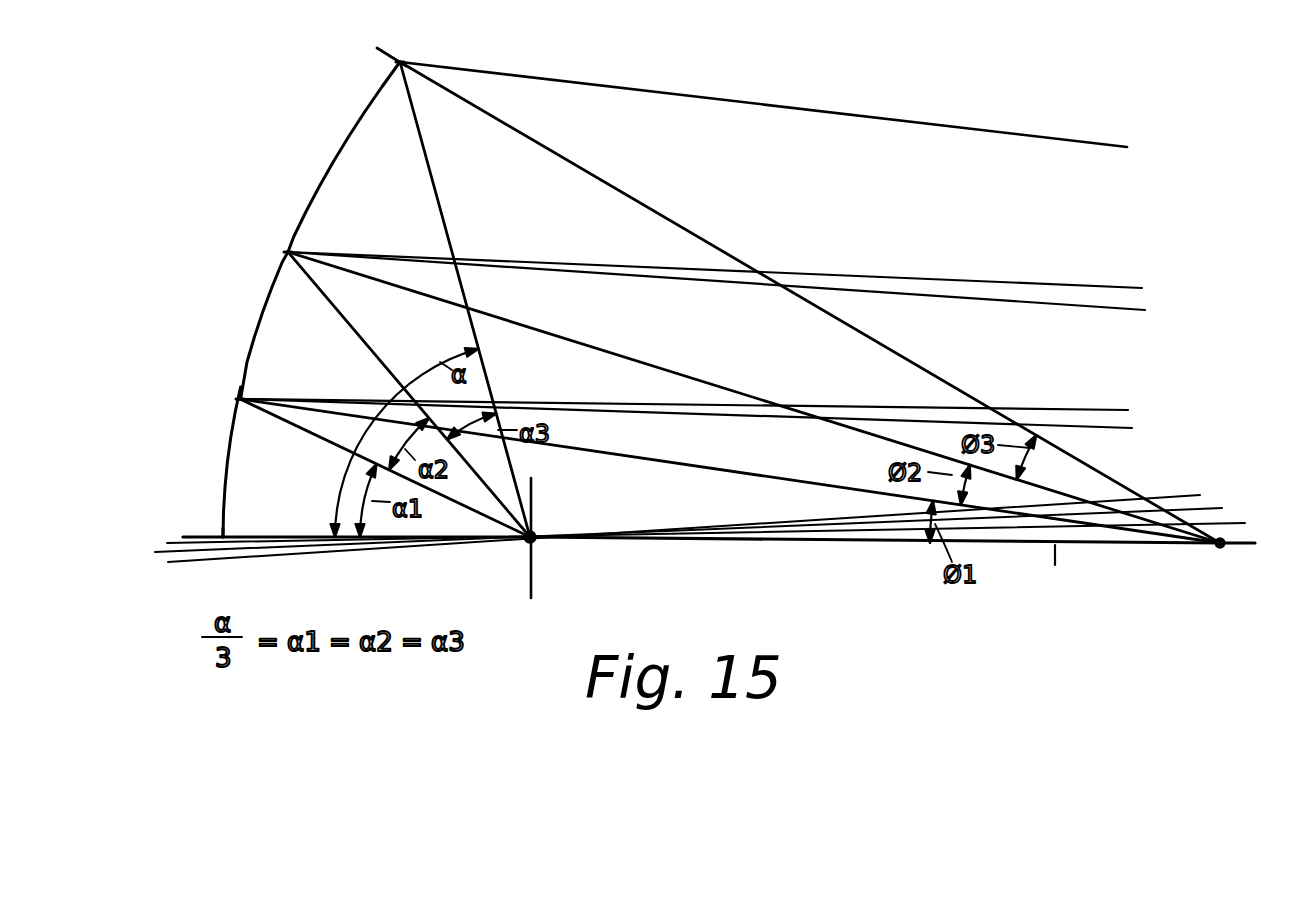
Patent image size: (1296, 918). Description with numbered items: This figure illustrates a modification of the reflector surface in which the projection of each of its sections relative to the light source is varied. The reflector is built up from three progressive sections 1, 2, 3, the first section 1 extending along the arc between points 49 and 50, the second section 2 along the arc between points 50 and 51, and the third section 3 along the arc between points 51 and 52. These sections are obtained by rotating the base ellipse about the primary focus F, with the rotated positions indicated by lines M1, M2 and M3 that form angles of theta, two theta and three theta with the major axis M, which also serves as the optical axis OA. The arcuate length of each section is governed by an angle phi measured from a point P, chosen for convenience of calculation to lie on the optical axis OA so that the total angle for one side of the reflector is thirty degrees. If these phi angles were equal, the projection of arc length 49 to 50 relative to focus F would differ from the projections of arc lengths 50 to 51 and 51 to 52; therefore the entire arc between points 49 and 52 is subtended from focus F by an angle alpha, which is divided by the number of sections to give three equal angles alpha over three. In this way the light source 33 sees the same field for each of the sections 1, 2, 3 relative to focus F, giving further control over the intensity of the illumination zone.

The section 1 is at (226, 448).
The section 2 is at (258, 313).
The section 3 is at (351, 128).
The light source 33 is at (528, 585).
The point 49 is at (225, 535).
The point 50 is at (245, 397).
The point 51 is at (290, 251).
The point 52 is at (403, 58).
The primary focus F is at (536, 545).
The point P is at (1217, 578).
The optical axis OA is at (1054, 570).
The major axis M is at (197, 535).
The rotated axis line M1 is at (173, 542).
The rotated axis line M2 is at (162, 552).
The rotated axis line M3 is at (180, 565).